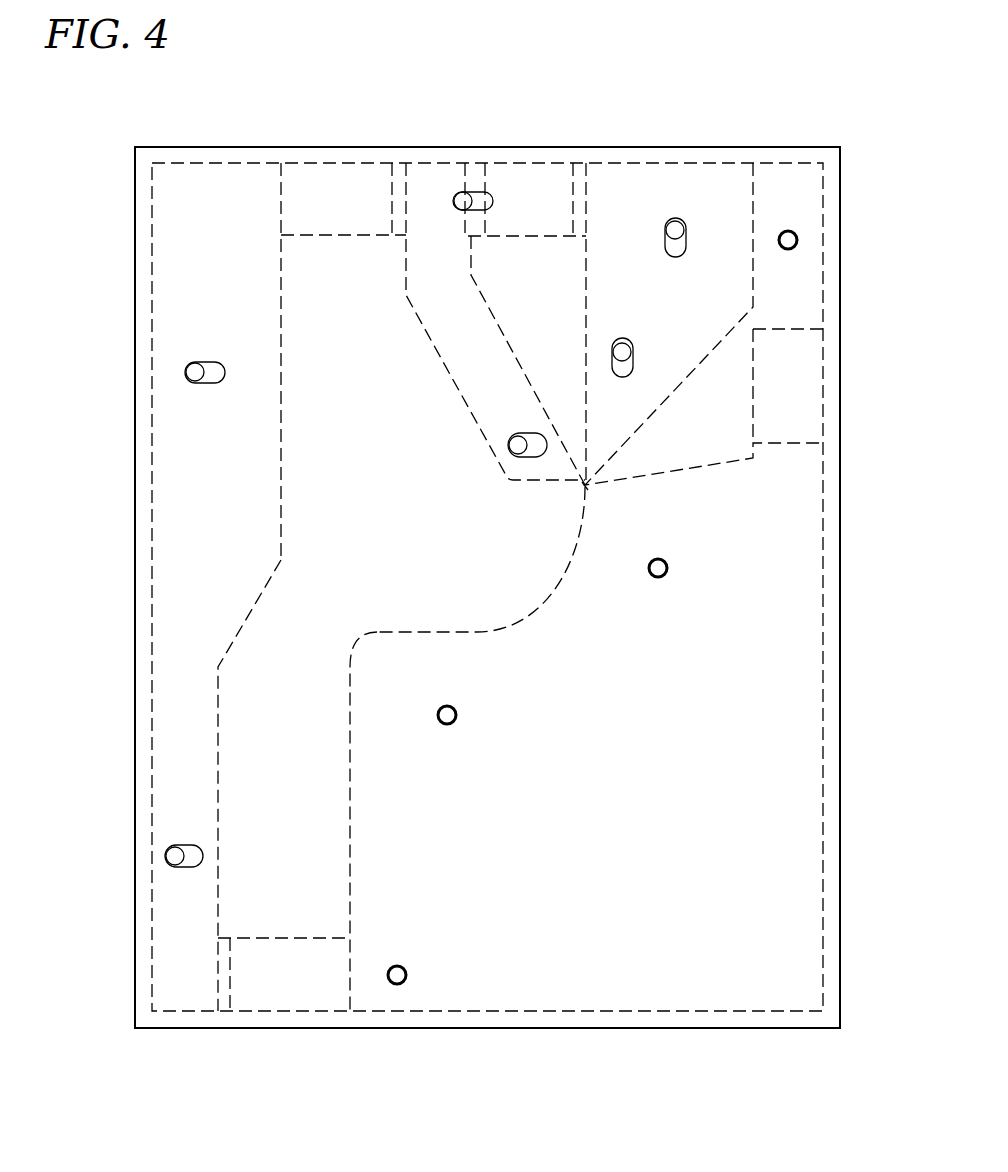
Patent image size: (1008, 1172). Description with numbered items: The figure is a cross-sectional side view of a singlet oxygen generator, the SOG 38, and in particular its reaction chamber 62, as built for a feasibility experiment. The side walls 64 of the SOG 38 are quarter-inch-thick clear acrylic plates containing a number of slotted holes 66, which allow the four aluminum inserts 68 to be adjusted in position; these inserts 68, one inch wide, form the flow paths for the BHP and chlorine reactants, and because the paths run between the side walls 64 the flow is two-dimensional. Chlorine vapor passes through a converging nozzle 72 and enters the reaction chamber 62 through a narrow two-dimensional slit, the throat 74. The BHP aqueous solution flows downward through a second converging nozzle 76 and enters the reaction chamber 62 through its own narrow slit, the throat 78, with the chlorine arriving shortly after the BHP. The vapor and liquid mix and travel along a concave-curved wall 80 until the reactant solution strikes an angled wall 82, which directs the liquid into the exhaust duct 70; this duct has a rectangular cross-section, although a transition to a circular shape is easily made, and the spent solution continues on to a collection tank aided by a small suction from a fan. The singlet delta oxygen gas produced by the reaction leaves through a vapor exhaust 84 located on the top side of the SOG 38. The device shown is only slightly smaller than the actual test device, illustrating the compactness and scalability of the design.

The SOG 38 is at (88, 208).
The reaction chamber 62 is at (397, 555).
The side walls 64 is at (842, 568).
The slotted holes 66 is at (677, 230).
The aluminum inserts 68 is at (425, 200).
The exhaust duct 70 is at (292, 917).
The converging nozzle 72 is at (700, 438).
The throat 74 is at (587, 488).
The converging nozzle 76 is at (527, 262).
The throat 78 is at (585, 487).
The concave-curved wall 80 is at (530, 600).
The angled wall 82 is at (258, 600).
The vapor exhaust 84 is at (318, 260).